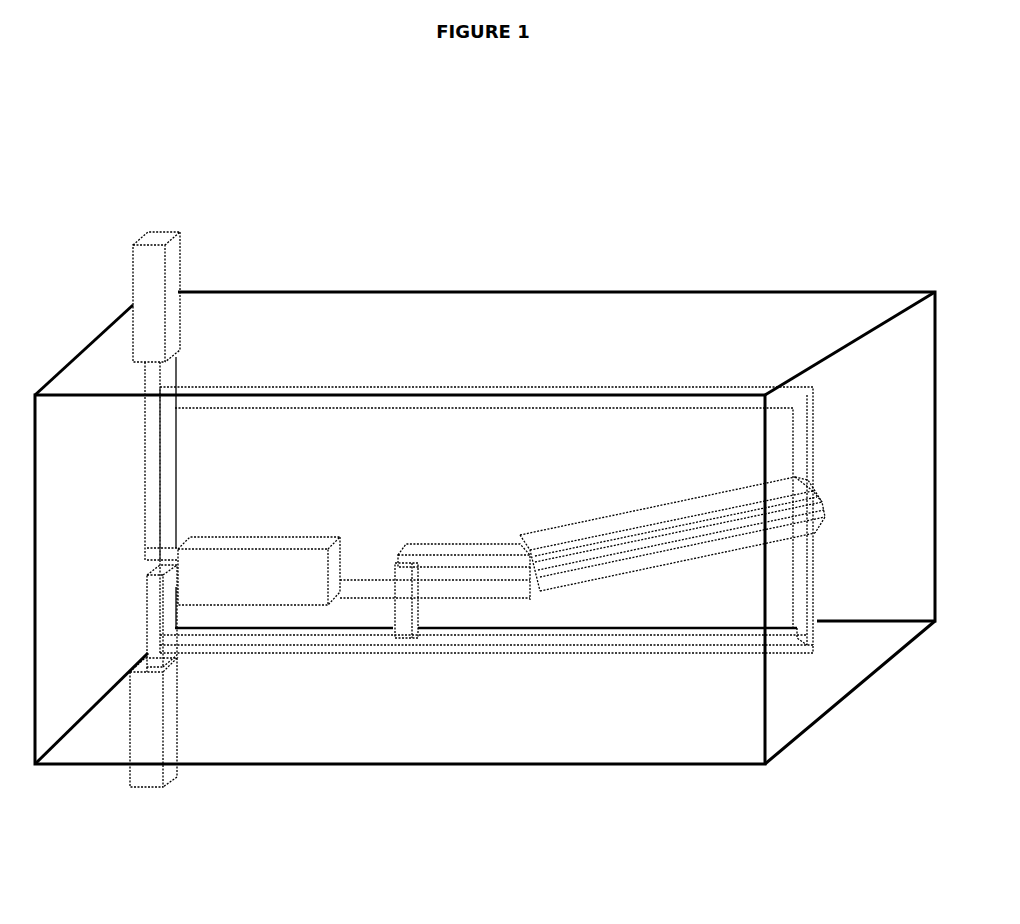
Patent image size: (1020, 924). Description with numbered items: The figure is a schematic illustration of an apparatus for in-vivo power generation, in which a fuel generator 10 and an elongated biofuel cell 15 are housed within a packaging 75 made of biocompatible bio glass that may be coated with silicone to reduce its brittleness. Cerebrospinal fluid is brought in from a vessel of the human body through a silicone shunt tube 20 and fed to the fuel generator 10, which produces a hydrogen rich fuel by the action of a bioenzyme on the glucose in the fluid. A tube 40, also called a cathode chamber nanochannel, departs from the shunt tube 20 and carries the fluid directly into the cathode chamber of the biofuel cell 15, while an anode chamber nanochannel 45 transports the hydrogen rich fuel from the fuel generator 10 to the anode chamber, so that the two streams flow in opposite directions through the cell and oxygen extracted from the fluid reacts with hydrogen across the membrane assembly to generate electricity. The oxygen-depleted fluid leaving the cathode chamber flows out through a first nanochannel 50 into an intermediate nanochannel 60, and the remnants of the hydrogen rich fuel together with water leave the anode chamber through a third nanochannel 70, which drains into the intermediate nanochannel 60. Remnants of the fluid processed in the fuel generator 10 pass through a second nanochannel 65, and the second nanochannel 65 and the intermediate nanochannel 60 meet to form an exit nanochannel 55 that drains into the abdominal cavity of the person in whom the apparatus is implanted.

The fuel generator 10 is at (283, 550).
The biofuel cell 15 is at (630, 533).
The shunt tube 20 is at (160, 423).
The tube 40 is at (593, 407).
The anode chamber nanochannel 45 is at (473, 597).
The first nanochannel 50 is at (453, 547).
The exit nanochannel 55 is at (177, 700).
The intermediate nanochannel 60 is at (275, 638).
The second nanochannel 65 is at (147, 612).
The third nanochannel 70 is at (650, 638).
The packaging 75 is at (652, 767).